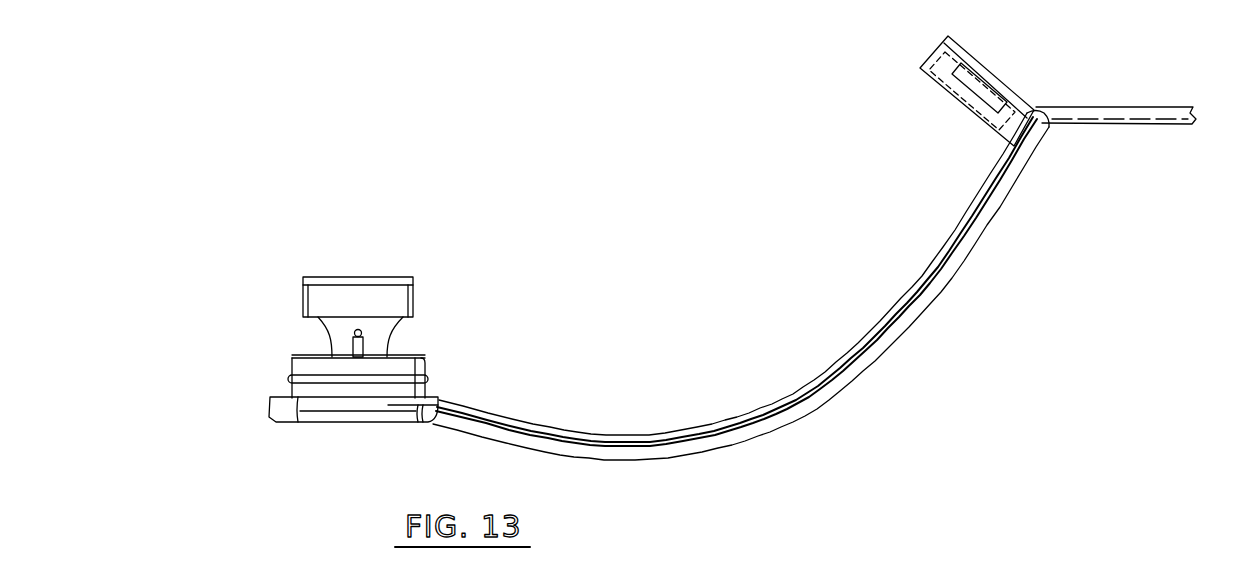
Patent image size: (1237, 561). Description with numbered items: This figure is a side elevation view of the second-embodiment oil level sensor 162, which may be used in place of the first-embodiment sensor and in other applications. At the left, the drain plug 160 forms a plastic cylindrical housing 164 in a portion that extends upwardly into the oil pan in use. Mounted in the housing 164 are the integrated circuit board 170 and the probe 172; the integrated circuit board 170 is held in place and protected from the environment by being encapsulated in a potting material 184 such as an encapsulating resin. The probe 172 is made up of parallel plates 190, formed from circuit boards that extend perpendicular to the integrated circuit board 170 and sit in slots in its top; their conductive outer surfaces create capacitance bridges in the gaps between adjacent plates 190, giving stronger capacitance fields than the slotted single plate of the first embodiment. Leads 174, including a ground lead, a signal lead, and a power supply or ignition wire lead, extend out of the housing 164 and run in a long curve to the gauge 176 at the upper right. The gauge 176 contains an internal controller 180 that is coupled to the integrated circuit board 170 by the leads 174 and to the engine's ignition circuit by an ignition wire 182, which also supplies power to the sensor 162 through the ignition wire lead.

The drain plug 160 is at (322, 424).
The sensor 162 is at (777, 157).
The housing 164 is at (350, 360).
The integrated circuit board 170 is at (347, 346).
The probe 172 is at (300, 294).
The leads 174 is at (824, 377).
The gauge 176 is at (1032, 82).
The internal controller 180 is at (970, 61).
The ignition wire 182 is at (1163, 106).
The potting material 184 is at (414, 354).
The plates 190 is at (358, 290).